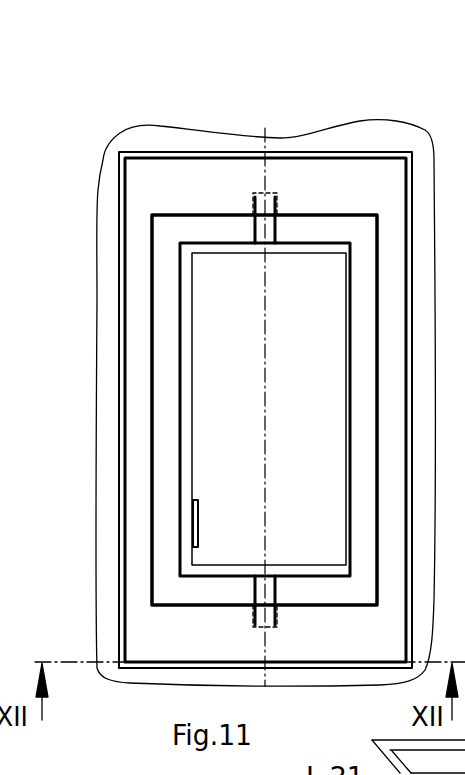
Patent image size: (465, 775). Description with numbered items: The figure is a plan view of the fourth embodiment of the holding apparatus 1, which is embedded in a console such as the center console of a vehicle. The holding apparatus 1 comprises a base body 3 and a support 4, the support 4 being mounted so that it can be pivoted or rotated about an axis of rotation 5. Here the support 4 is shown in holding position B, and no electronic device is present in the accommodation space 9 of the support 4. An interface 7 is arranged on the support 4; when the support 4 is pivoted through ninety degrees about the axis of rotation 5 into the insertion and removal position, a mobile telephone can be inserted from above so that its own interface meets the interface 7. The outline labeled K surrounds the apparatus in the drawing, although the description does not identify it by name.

The holding apparatus 1 is at (330, 84).
The base body 3 is at (215, 190).
The support 4 is at (184, 303).
The axis of rotation 5 is at (266, 179).
The interface 7 is at (198, 523).
The accommodation space 9 is at (310, 325).
The holding position B is at (364, 281).
The wall contour K is at (108, 378).